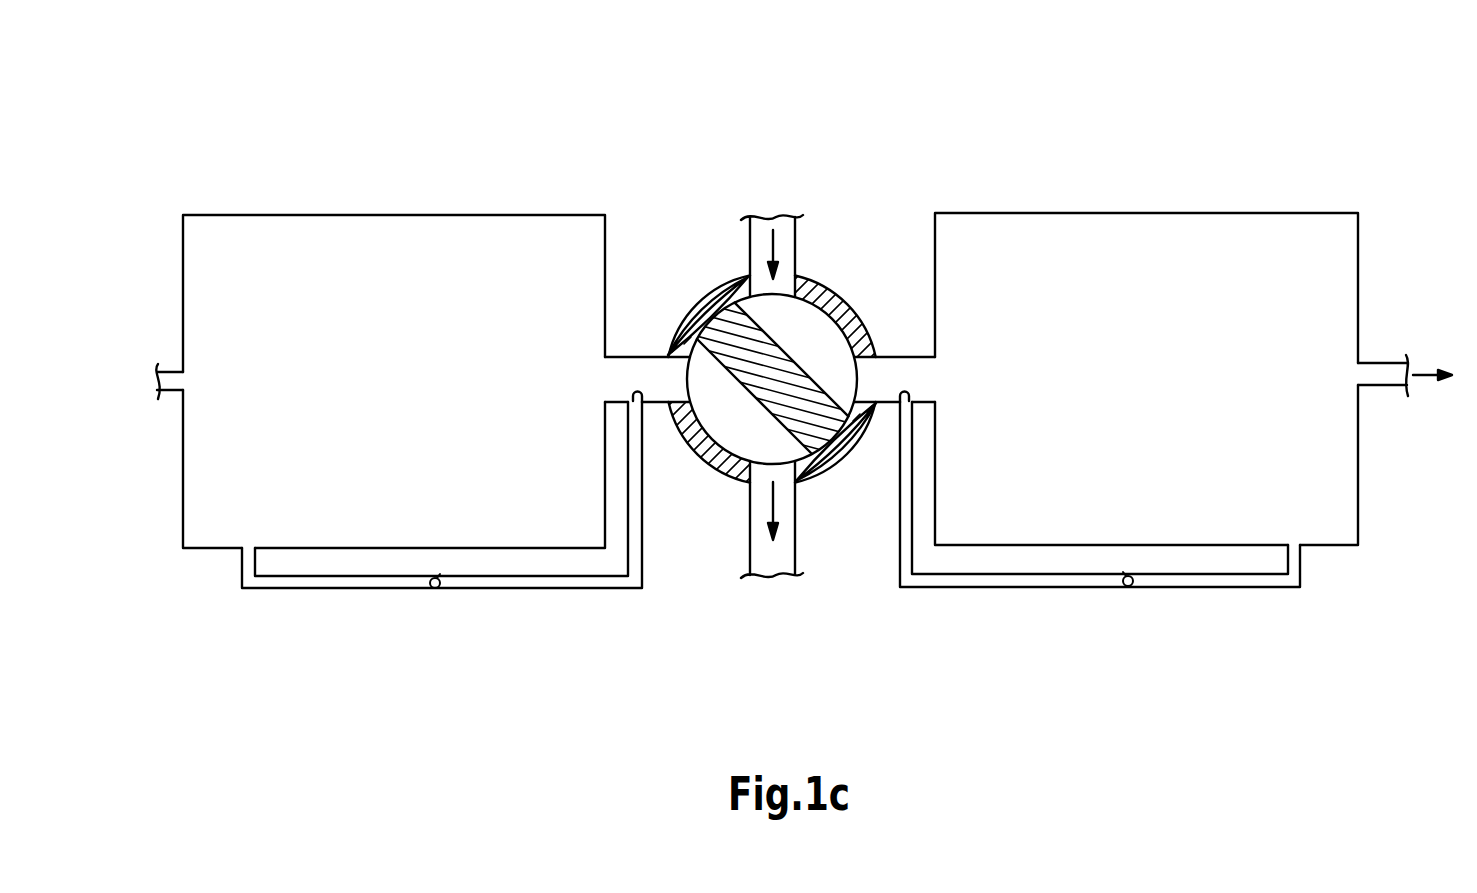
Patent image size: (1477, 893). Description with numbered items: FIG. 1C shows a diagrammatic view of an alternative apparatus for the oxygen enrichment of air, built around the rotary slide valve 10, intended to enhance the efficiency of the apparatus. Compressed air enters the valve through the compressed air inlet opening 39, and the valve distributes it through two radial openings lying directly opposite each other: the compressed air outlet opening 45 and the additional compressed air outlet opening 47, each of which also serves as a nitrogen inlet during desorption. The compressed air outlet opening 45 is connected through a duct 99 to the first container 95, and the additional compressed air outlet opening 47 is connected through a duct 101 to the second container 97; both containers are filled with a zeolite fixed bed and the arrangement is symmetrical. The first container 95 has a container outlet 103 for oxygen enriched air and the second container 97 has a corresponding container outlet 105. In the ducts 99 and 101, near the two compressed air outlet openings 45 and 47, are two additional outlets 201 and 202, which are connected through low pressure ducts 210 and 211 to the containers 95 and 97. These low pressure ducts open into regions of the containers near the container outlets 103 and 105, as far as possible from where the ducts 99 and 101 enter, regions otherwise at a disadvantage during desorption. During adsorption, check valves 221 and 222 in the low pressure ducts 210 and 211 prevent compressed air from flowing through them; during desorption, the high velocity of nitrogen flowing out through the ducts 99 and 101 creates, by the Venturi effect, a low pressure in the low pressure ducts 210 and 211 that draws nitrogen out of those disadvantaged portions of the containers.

The rotary slide valve 10 is at (752, 152).
The compressed air inlet opening 39 is at (785, 219).
The compressed air outlet opening 45 is at (668, 356).
The additional compressed air outlet opening 47 is at (879, 350).
The first container 95 is at (395, 232).
The second container 97 is at (1168, 225).
The duct 99 is at (618, 356).
The duct 101 is at (900, 355).
The container outlet 103 is at (168, 372).
The container outlet 105 is at (1380, 373).
The additional outlet 201 is at (640, 406).
The additional outlet 202 is at (895, 406).
The low pressure duct 210 is at (582, 584).
The low pressure duct 211 is at (1022, 586).
The check valve 221 is at (434, 590).
The check valve 222 is at (1130, 588).